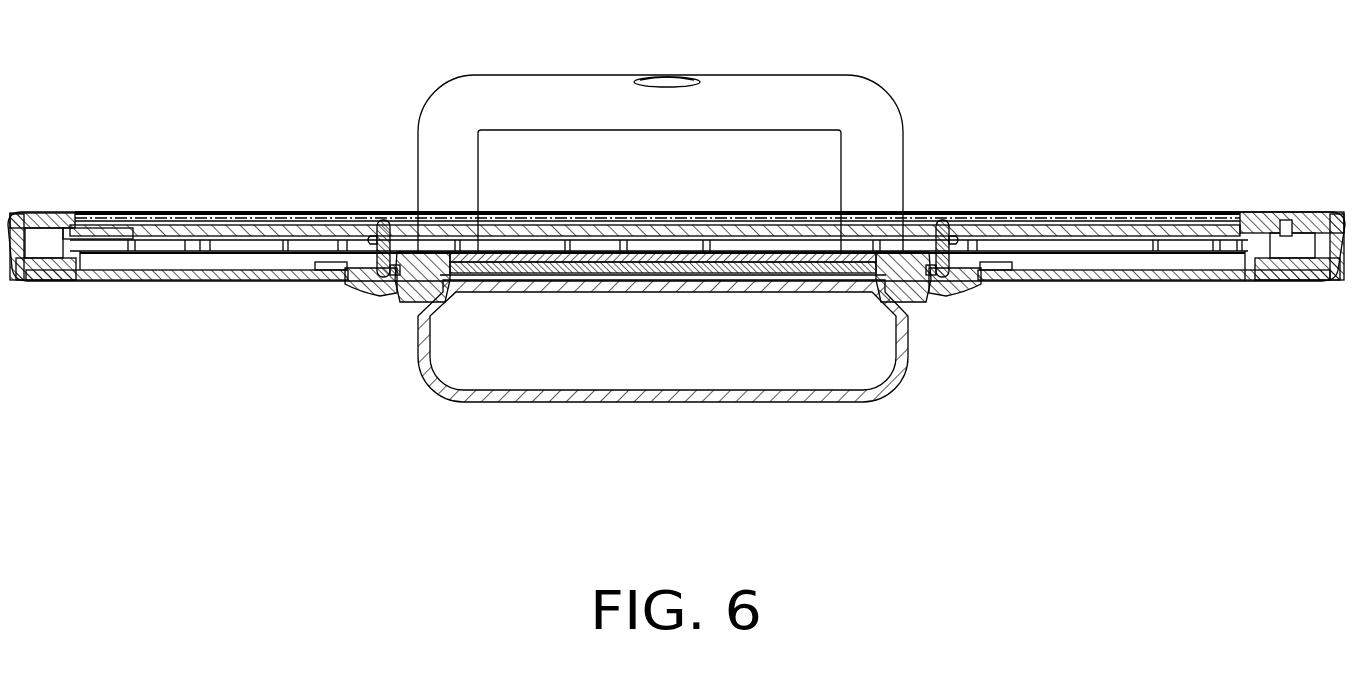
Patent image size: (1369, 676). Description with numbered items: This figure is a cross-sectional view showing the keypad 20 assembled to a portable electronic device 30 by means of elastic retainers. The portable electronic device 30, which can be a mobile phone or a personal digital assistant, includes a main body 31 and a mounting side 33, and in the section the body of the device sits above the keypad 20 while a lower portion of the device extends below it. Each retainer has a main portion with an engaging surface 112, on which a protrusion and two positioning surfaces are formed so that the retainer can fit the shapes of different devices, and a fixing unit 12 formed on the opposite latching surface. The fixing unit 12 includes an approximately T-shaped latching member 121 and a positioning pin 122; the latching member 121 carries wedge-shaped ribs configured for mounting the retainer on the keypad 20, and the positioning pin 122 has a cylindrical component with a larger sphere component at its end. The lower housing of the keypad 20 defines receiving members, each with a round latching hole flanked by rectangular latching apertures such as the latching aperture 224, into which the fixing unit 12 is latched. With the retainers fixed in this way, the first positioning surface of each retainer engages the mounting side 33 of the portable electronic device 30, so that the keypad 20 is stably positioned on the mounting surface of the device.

The fixing unit 12 is at (1010, 70).
The engaging surface 112 is at (390, 293).
The latching member 121 is at (413, 256).
The positioning pin 122 is at (945, 240).
The keypad 20 is at (1258, 218).
The latching aperture 224 is at (340, 268).
The portable electronic device 30 is at (768, 110).
The main body 31 is at (650, 325).
The mounting side 33 is at (450, 290).